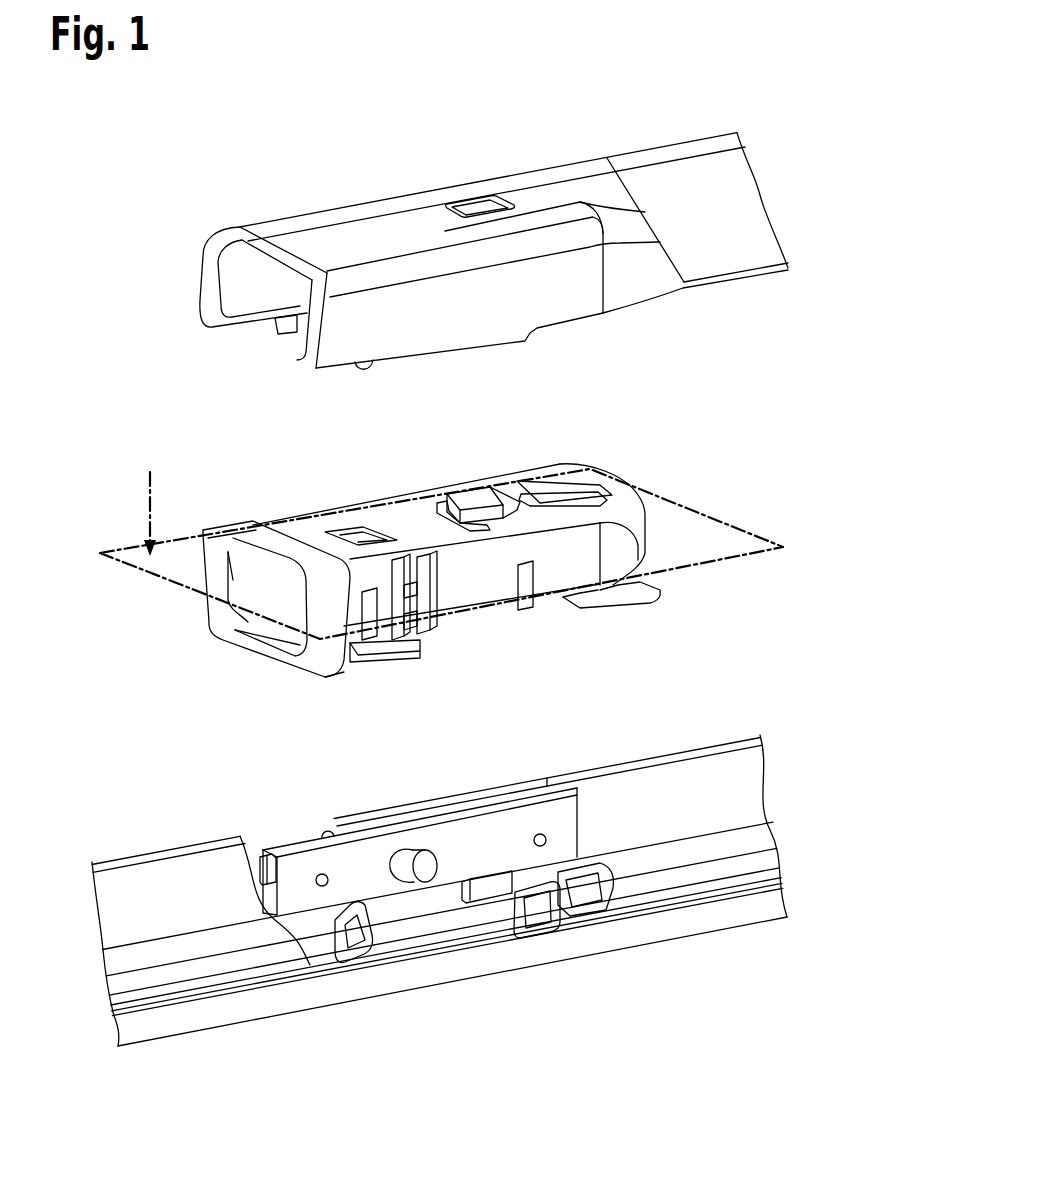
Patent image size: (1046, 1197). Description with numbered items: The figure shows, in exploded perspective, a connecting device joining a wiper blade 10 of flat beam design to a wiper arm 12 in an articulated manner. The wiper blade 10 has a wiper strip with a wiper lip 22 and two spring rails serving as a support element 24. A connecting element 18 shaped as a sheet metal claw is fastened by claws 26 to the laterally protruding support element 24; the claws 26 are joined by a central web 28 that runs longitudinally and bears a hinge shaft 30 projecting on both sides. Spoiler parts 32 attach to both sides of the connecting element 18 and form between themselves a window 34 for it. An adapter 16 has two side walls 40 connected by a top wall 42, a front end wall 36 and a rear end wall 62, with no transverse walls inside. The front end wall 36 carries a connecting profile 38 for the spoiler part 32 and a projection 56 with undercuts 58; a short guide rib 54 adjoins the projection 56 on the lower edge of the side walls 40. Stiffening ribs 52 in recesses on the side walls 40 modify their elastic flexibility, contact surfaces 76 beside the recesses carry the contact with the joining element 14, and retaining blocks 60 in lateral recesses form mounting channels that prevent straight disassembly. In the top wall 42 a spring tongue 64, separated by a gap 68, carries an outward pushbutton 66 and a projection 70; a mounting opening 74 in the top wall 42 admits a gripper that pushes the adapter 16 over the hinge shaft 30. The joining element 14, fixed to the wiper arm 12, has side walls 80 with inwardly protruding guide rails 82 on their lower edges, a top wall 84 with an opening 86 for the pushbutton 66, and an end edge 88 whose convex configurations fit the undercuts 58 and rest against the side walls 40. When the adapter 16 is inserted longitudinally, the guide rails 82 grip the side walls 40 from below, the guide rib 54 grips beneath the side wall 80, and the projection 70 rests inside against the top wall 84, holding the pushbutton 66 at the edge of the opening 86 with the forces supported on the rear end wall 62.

The wiper blade 10 is at (796, 761).
The wiper arm 12 is at (660, 180).
The joining element 14 is at (287, 194).
The adapter 16 is at (249, 656).
The connecting element 18 is at (316, 828).
The wiper lip 22 is at (733, 920).
The support element 24 is at (578, 902).
The claws 26 is at (377, 950).
The central web 28 is at (380, 880).
The hinge shaft 30 is at (430, 873).
The spoiler parts 32 is at (112, 885).
The window 34 is at (250, 863).
The front end wall 36 is at (292, 625).
The connecting profile 38 is at (230, 617).
The side walls 40 is at (570, 570).
The top wall 42 is at (408, 522).
The stiffening ribs 52 is at (430, 607).
The guide rib 54 is at (400, 657).
The projection 56 is at (280, 530).
The undercuts 58 is at (357, 640).
The retaining blocks 60 is at (640, 592).
The rear end wall 62 is at (647, 517).
The spring tongue 64 is at (567, 493).
The pushbutton 66 is at (482, 495).
The gap 68 is at (567, 472).
The projection 70 is at (447, 507).
The mounting opening 74 is at (355, 542).
The contact surfaces 76 is at (370, 613).
The side walls 80 is at (537, 290).
The guide rails 82 is at (360, 367).
The top wall 84 is at (383, 222).
The opening 86 is at (486, 207).
The end edge 88 is at (275, 247).